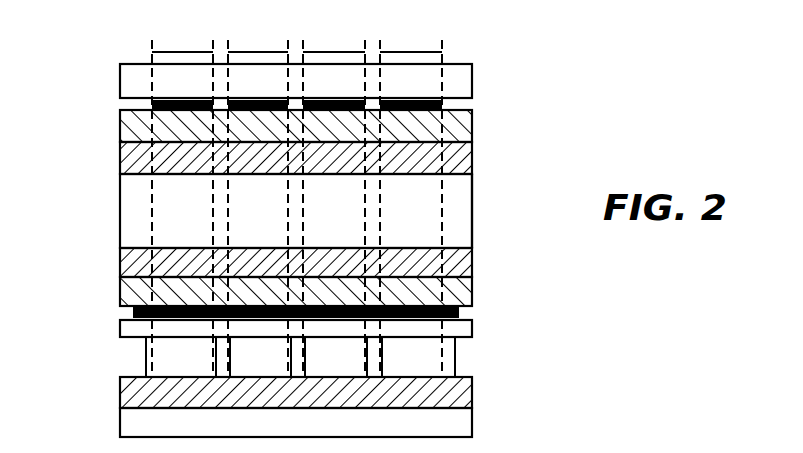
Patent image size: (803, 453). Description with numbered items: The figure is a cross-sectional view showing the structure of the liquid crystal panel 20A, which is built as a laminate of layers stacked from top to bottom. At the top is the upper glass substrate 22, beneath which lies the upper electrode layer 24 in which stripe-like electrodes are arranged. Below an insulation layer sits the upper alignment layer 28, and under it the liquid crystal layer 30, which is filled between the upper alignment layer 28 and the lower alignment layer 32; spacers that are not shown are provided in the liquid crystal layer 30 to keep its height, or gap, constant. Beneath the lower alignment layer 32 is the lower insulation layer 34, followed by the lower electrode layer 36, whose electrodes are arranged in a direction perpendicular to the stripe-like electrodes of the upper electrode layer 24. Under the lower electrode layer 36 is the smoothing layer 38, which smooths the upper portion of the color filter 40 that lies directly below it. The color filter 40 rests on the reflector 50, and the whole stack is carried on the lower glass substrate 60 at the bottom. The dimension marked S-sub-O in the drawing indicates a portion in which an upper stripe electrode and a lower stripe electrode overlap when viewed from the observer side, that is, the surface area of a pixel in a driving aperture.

The liquid crystal panel 20A is at (483, 98).
The upper glass substrate 22 is at (120, 80).
The upper electrode layer 24 is at (127, 106).
The upper alignment layer 28 is at (121, 180).
The liquid crystal layer 30 is at (464, 209).
The lower alignment layer 32 is at (120, 263).
The lower insulation layer 34 is at (120, 297).
The lower electrode layer 36 is at (127, 313).
The smoothing layer 38 is at (146, 336).
The color filter 40 is at (456, 352).
The reflector 50 is at (120, 388).
The lower glass substrate 60 is at (120, 426).